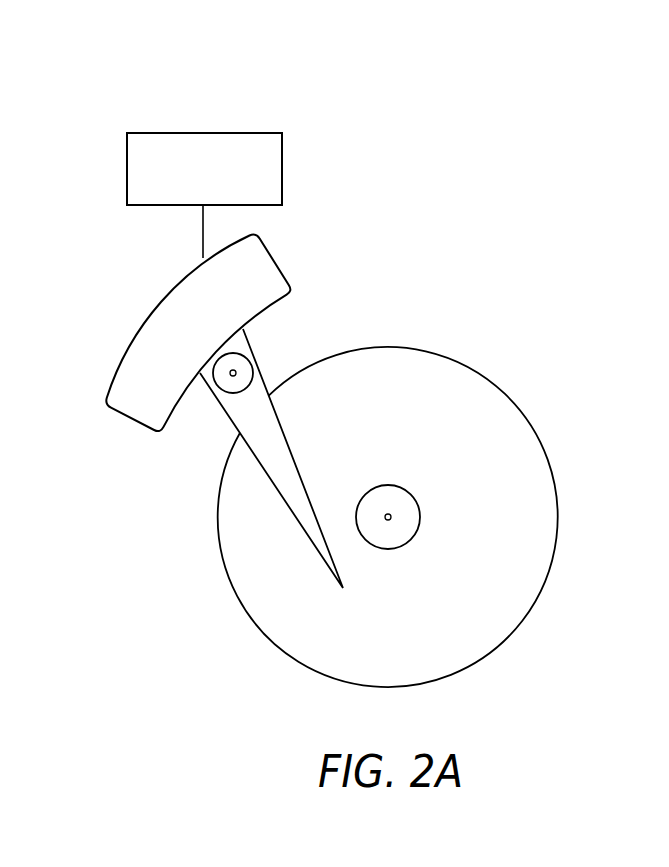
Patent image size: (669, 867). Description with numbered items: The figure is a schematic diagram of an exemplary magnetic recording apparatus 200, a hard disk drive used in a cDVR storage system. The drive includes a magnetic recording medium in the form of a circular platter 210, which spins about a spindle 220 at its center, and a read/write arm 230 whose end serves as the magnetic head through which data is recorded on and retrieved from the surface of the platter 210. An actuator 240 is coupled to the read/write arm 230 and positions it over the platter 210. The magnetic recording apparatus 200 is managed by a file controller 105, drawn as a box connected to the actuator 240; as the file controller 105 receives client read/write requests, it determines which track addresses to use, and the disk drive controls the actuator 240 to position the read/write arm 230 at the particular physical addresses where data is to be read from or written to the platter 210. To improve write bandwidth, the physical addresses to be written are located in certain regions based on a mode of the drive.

The magnetic recording apparatus 200 is at (198, 74).
The file controller 105 is at (195, 133).
The circular platter 210 is at (537, 428).
The spindle 220 is at (420, 515).
The read/write arm 230 is at (302, 472).
The actuator 240 is at (277, 258).